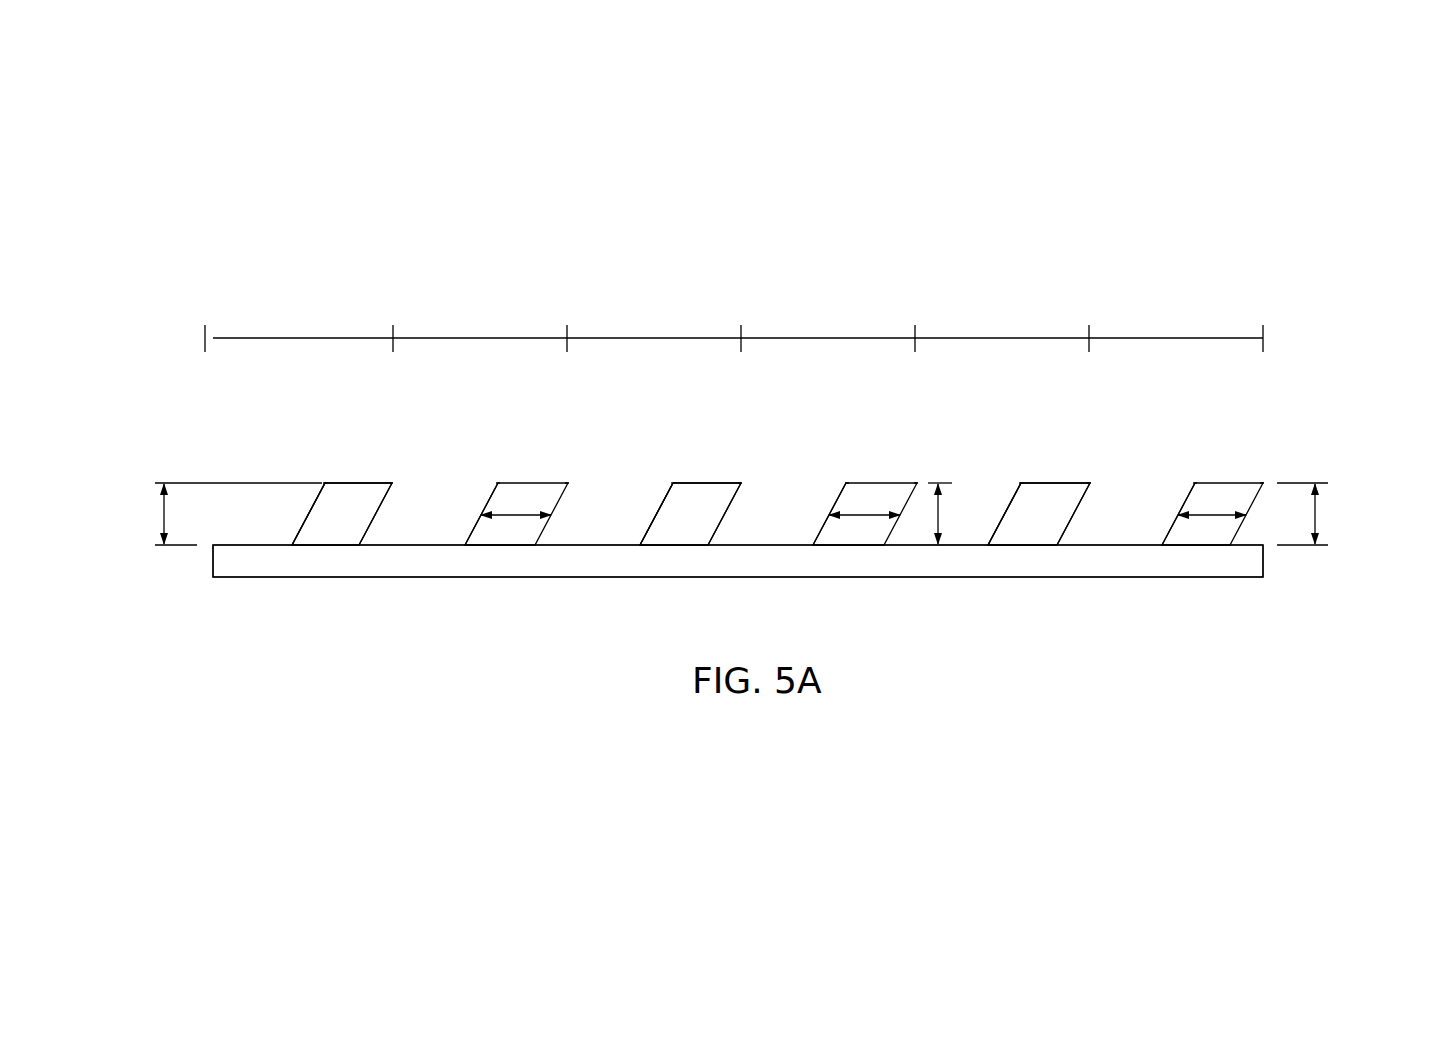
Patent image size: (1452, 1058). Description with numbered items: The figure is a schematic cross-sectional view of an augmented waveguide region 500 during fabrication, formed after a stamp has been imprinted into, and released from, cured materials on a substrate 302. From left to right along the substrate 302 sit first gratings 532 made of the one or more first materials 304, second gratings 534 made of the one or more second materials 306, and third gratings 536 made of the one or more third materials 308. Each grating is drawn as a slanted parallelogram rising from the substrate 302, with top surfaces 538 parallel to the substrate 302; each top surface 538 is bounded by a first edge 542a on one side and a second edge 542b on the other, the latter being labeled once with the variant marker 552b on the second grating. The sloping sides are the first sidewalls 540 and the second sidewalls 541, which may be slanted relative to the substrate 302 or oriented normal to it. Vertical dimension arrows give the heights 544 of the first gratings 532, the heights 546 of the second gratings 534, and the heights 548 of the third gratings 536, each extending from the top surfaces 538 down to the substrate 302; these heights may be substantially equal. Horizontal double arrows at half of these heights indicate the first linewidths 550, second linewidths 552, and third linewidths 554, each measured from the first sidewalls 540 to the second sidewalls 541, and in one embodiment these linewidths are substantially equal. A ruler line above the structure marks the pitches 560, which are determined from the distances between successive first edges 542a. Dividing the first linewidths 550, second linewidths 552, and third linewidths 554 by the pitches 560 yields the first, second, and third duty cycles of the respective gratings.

The augmented waveguide region 500 is at (1297, 363).
The substrate 302 is at (1265, 563).
The one or more first materials 304 is at (337, 522).
The one or more second materials 306 is at (680, 527).
The one or more third materials 308 is at (1033, 522).
The first gratings 532 is at (305, 520).
The second gratings 534 is at (652, 522).
The third gratings 536 is at (998, 525).
The top surfaces 538 is at (358, 481).
The first sidewalls 540 is at (310, 497).
The second sidewalls 541 is at (378, 513).
The first edge 542a is at (395, 482).
The second edge 542b is at (323, 481).
The second top edge of second fin 552b is at (672, 481).
The heights 544 is at (157, 517).
The heights 546 is at (938, 517).
The heights 548 is at (1315, 513).
The first linewidths 550 is at (518, 517).
The second linewidths 552 is at (867, 517).
The third linewidths 554 is at (1213, 517).
The pitches 560 is at (295, 338).